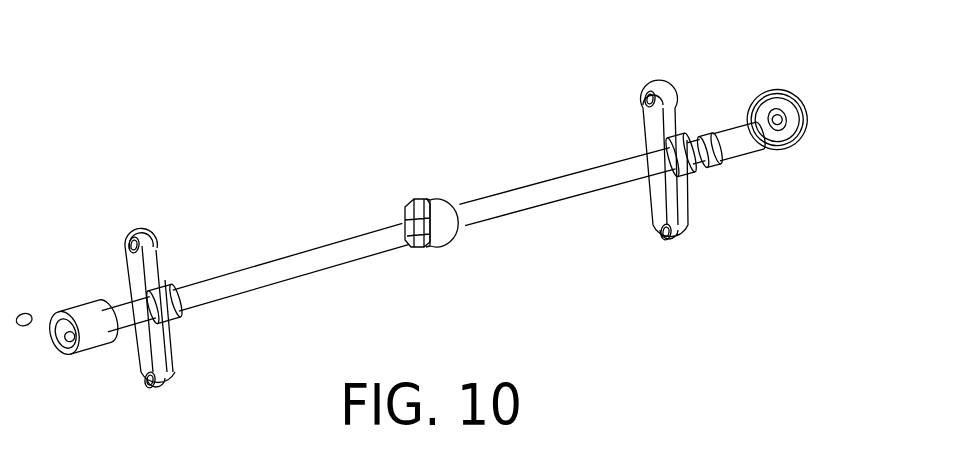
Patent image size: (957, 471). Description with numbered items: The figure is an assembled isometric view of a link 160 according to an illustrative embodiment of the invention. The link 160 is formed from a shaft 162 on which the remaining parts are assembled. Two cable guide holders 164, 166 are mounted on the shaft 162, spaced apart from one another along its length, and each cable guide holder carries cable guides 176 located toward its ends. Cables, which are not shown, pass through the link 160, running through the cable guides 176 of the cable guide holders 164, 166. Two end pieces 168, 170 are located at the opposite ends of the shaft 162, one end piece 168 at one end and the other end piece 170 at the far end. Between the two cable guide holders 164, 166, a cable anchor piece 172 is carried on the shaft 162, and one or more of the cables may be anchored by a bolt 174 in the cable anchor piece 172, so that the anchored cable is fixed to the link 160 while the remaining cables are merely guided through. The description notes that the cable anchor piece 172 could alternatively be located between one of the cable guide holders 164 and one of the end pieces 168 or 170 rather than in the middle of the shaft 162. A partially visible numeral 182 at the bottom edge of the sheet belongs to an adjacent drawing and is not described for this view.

The link 160 is at (152, 119).
The shaft 162 is at (292, 265).
The cable guide holder 164 is at (163, 275).
The cable guide holder 166 is at (668, 130).
The end piece 168 is at (27, 323).
The end piece 170 is at (790, 143).
The cable anchor piece 172 is at (448, 218).
The bolt 174 is at (410, 200).
The cable guides 176 is at (125, 240).
The element of adjacent figure 182 is at (671, 464).